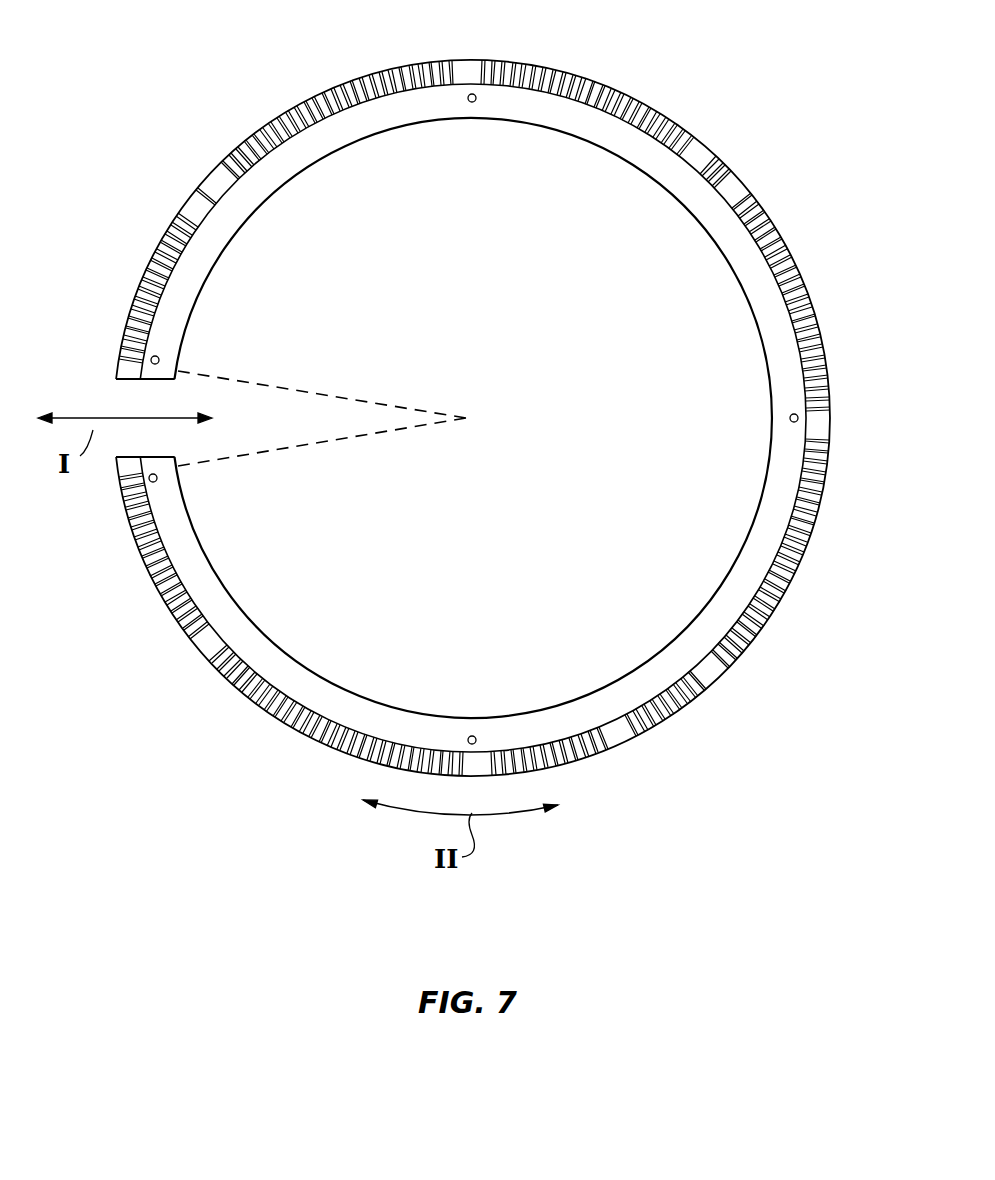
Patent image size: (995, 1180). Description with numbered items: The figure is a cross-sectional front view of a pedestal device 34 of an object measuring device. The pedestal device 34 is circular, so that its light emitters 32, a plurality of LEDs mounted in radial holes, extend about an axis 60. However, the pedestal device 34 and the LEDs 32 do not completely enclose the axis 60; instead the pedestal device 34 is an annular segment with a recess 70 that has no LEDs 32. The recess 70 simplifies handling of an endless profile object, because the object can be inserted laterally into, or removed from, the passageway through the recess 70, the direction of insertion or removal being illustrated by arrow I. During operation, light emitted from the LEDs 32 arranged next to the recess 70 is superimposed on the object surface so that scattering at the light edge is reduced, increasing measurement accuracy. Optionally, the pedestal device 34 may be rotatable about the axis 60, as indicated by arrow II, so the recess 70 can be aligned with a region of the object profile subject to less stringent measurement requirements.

The light emitters 32 is at (588, 62).
The pedestal device 34 is at (667, 175).
The axis 60 is at (466, 418).
The recess 70 is at (132, 397).